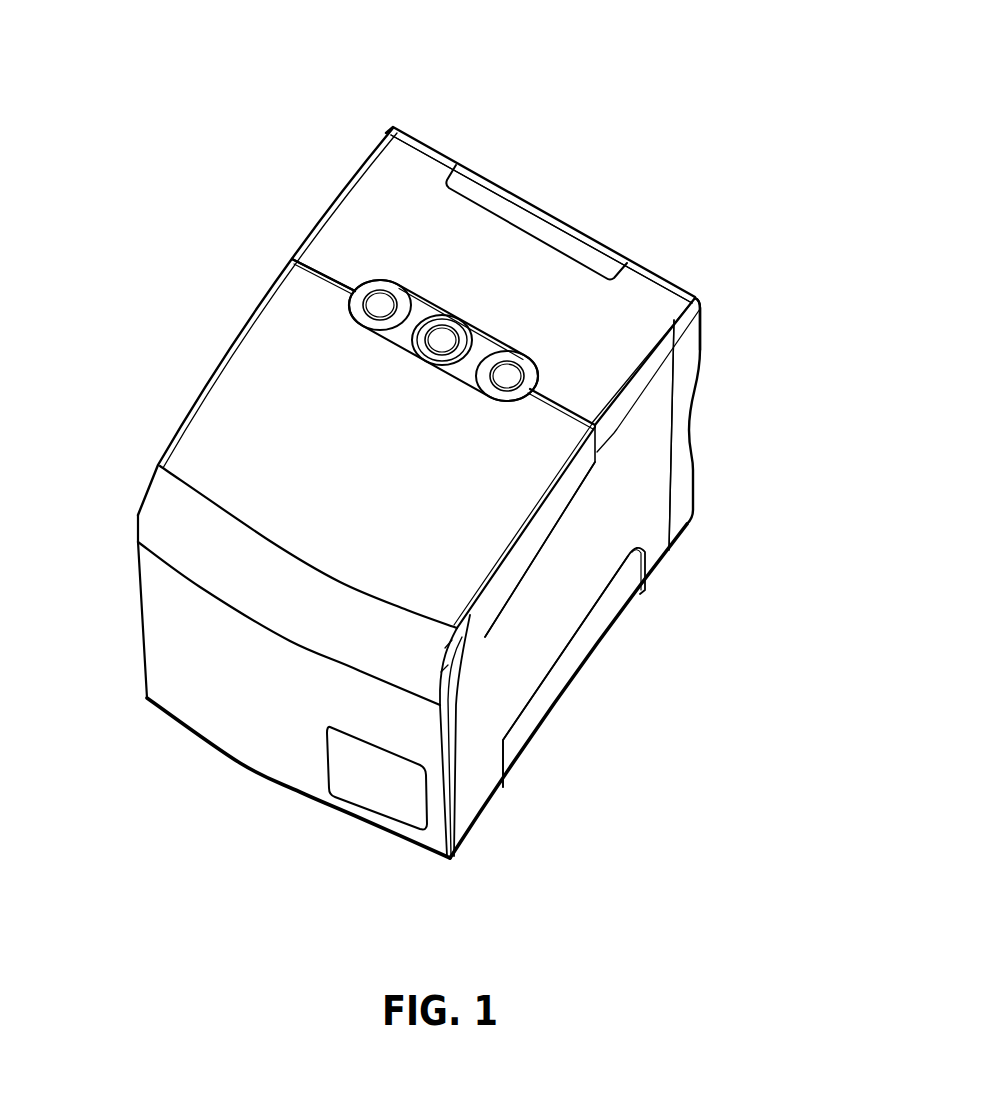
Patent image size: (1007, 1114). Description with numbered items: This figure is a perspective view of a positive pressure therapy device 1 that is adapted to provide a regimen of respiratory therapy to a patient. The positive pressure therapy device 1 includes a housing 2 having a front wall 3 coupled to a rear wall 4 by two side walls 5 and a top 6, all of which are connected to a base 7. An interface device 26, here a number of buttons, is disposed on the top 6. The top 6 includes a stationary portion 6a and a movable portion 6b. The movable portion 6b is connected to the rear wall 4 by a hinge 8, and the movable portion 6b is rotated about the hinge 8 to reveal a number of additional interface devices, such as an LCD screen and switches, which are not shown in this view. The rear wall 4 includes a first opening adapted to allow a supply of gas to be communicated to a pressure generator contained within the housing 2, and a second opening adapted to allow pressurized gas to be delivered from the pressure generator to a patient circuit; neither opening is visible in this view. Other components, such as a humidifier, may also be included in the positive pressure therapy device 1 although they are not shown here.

The positive pressure therapy device 1 is at (791, 35).
The housing 2 is at (681, 667).
The front wall 3 is at (262, 747).
The rear wall 4 is at (688, 432).
The side walls 5 is at (140, 598).
The top 6 is at (305, 328).
The stationary portion 6a is at (264, 383).
The movable portion 6b is at (390, 203).
The base 7 is at (488, 803).
The hinge 8 is at (688, 325).
The interface device 26 is at (487, 371).